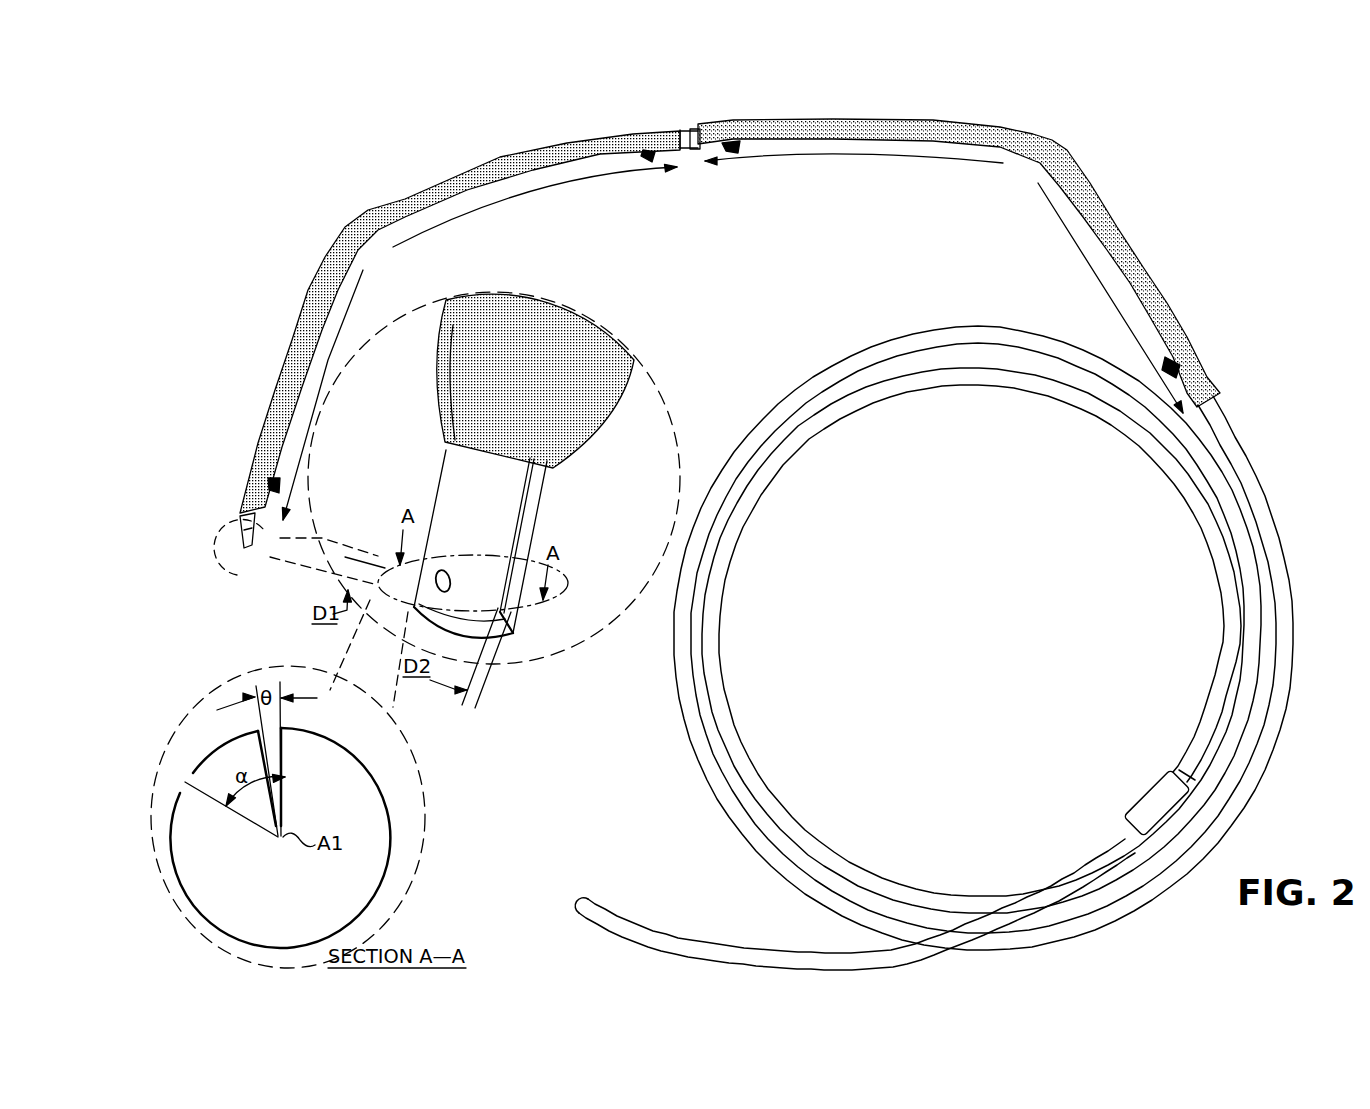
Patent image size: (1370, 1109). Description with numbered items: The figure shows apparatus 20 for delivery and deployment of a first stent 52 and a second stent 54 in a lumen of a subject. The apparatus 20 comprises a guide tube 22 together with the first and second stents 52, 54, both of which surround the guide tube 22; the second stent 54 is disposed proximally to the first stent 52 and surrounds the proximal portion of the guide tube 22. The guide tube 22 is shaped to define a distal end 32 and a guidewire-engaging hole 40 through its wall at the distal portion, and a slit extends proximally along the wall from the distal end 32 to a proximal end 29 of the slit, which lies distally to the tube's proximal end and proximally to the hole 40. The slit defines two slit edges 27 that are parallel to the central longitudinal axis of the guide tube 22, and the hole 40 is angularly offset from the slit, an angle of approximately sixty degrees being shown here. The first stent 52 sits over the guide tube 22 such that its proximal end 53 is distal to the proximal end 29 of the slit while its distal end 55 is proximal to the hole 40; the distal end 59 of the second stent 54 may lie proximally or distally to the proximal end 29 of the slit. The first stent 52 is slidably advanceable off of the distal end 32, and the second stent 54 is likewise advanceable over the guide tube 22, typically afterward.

The apparatus 20 is at (270, 236).
The guide tube 22 is at (692, 130).
The slit edges 27 is at (522, 522).
The proximal end of slit 29 is at (691, 150).
The distal end of guide tube 32 is at (513, 637).
The hole 40 is at (453, 573).
The first stent 52 is at (367, 210).
The proximal end of first stent 53 is at (665, 132).
The second stent 54 is at (1030, 131).
The distal end of first stent 55 is at (238, 518).
The distal end of second stent 59 is at (705, 128).